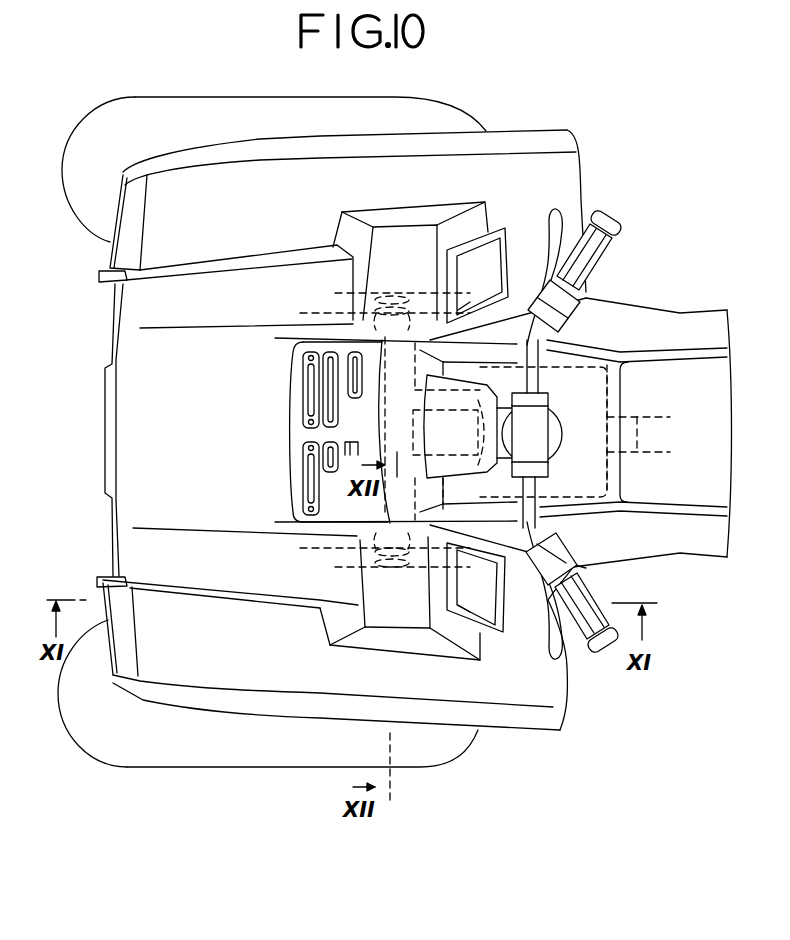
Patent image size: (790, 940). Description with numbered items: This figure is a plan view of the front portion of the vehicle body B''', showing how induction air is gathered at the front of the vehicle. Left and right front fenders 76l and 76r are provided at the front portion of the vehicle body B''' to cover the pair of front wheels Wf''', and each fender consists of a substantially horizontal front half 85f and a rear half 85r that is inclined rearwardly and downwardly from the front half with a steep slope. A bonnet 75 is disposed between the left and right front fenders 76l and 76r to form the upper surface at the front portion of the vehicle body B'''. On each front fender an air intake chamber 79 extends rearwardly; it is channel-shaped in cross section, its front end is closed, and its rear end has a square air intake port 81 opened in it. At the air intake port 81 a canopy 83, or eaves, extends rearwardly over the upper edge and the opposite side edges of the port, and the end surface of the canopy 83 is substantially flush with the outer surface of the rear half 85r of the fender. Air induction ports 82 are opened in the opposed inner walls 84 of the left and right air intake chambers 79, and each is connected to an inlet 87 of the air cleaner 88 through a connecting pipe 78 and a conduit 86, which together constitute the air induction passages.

The front wheels Wf is at (206, 97).
The bonnet 75 is at (227, 460).
The right front fender 76r is at (247, 232).
The left front fender 76l is at (233, 661).
The connecting pipe 78 is at (353, 318).
The air intake chamber 79 is at (417, 220).
The air intake port 81 is at (488, 246).
The air induction port 82 is at (402, 303).
The canopy 83 is at (450, 272).
The inner wall 84 is at (467, 305).
The front half 85f is at (362, 173).
The rear half 85r is at (563, 170).
The conduit 86 is at (455, 442).
The inlet 87 is at (478, 433).
The air cleaner 88 is at (585, 365).
The vehicle body B is at (618, 298).